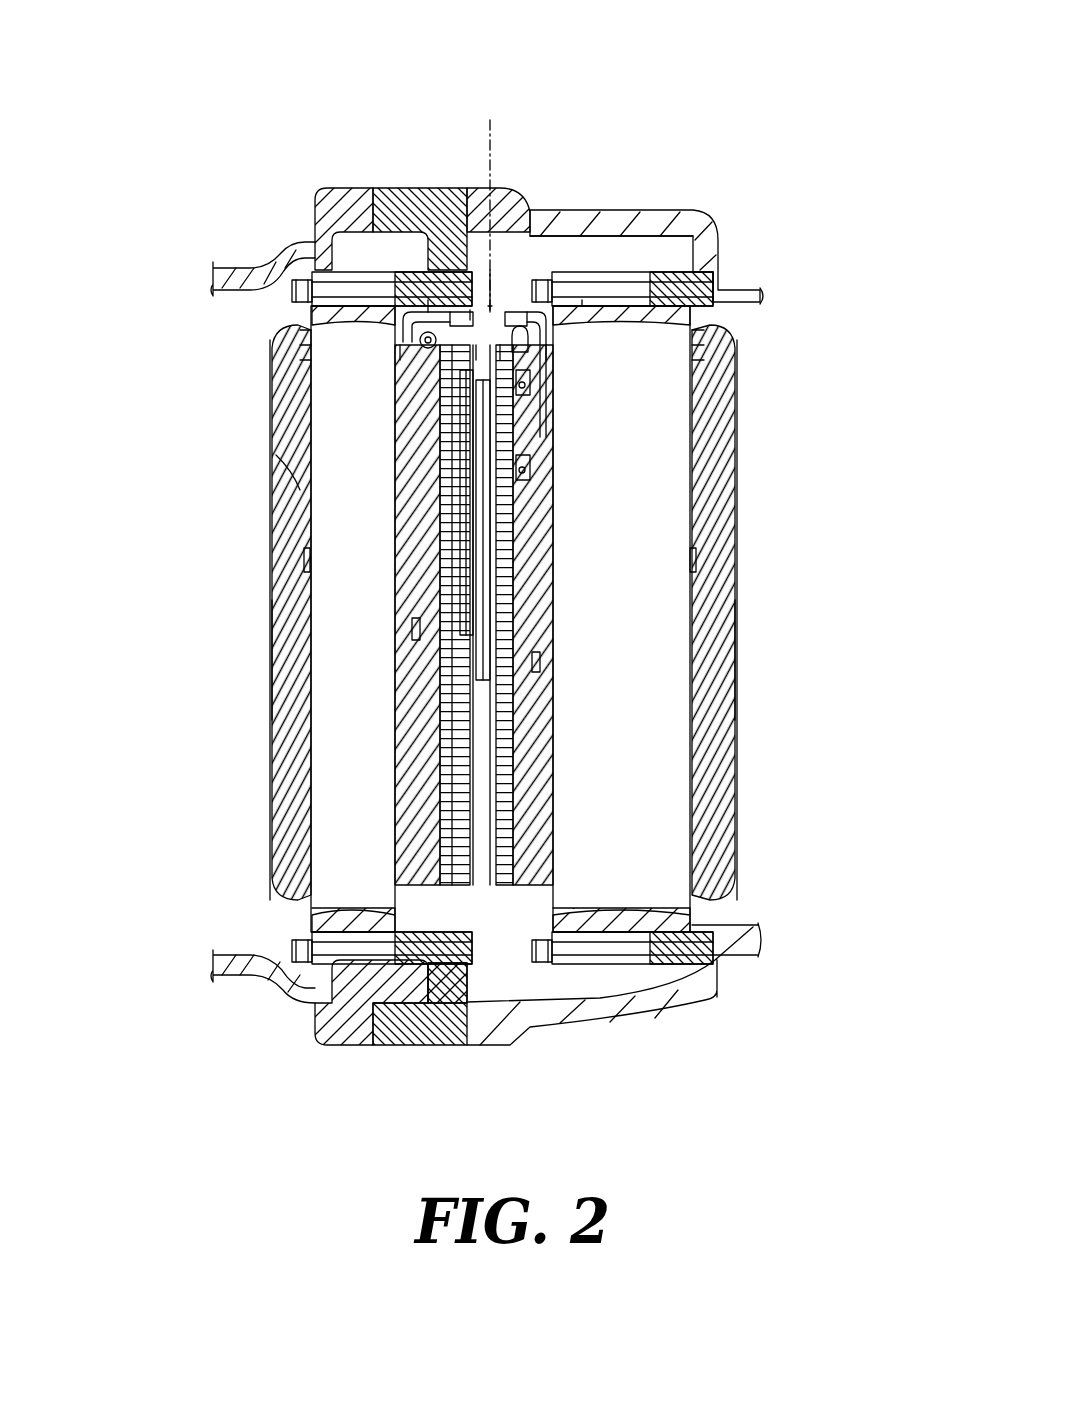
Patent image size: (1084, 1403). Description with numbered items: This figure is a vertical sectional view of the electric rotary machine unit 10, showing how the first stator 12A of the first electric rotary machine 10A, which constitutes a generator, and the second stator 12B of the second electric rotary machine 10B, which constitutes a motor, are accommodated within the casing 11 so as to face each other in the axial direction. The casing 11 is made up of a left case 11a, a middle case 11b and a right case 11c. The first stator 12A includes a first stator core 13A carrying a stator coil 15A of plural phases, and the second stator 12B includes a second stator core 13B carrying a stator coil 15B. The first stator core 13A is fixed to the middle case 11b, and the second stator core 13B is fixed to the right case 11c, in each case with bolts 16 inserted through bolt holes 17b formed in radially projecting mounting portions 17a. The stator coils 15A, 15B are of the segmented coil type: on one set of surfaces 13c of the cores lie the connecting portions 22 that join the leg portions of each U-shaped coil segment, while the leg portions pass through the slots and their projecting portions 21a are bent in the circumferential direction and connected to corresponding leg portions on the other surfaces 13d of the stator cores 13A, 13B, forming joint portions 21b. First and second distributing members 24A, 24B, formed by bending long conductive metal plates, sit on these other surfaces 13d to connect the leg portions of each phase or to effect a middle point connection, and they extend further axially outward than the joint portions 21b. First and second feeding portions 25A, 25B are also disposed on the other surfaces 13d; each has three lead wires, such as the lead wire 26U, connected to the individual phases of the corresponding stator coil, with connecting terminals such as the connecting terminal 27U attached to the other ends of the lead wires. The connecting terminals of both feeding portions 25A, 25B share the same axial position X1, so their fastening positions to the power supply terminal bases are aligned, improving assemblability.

The electric rotary machine unit 10 is at (694, 86).
The first electric rotary machine 10A is at (246, 350).
The second electric rotary machine 10B is at (760, 355).
The casing 11 is at (346, 184).
The left case 11a is at (262, 972).
The middle case 11b is at (424, 1022).
The right case 11c is at (640, 1006).
The first stator 12A is at (266, 404).
The second stator 12B is at (740, 422).
The first stator core 13A is at (343, 518).
The second stator core 13B is at (665, 524).
The surfaces of the stator cores 13c is at (305, 560).
The other surfaces of the stator cores 13d is at (417, 628).
The stator coil 15A is at (268, 662).
The stator coil 15B is at (737, 665).
The bolts 16 is at (330, 290).
The mounting portions 17a is at (652, 290).
The bolt holes 17b is at (352, 282).
The projecting portions 21a is at (530, 790).
The joint portions 21b is at (440, 786).
The connecting portion 22 is at (282, 470).
The first distributing member 24A is at (467, 558).
The second distributing member 24B is at (482, 622).
The first feeding portion 25A is at (395, 304).
The second feeding portion 25B is at (516, 303).
The lead wire 26U is at (428, 300).
The connecting terminal 27U is at (470, 310).
The axial position of the connecting terminals X1 is at (492, 168).